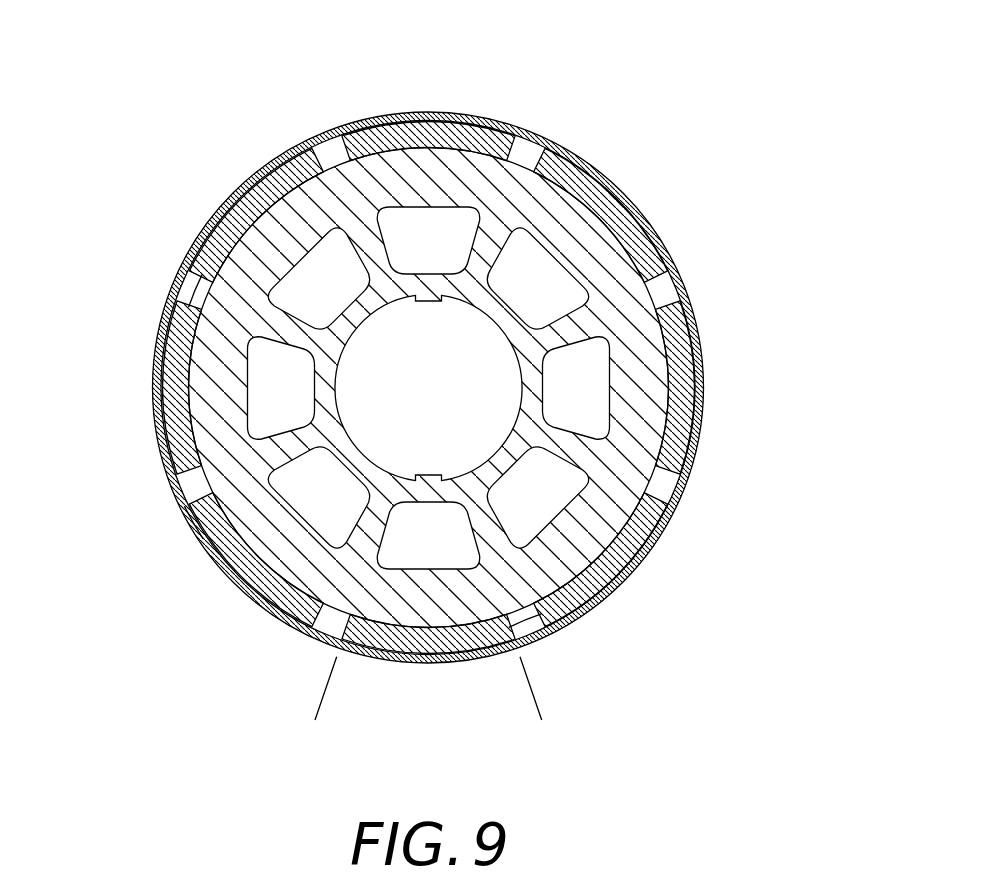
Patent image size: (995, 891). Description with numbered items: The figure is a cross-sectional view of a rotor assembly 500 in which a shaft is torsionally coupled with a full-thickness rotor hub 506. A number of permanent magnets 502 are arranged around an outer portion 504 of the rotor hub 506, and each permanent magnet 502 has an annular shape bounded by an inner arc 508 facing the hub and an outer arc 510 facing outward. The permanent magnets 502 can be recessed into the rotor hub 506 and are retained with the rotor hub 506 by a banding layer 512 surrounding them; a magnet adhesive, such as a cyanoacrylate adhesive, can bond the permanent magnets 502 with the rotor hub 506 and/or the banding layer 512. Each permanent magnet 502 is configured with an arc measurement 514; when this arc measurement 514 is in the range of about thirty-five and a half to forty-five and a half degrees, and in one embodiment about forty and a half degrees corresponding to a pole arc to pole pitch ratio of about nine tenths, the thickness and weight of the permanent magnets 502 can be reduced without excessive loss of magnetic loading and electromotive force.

The rotor assembly 500 is at (697, 92).
The permanent magnet 502 is at (243, 190).
The outer portion 504 is at (530, 627).
The rotor hub 506 is at (617, 473).
The inner arc 508 is at (209, 286).
The outer arc 510 is at (212, 222).
The banding layer 512 is at (180, 527).
The arc measurement 514 is at (529, 687).